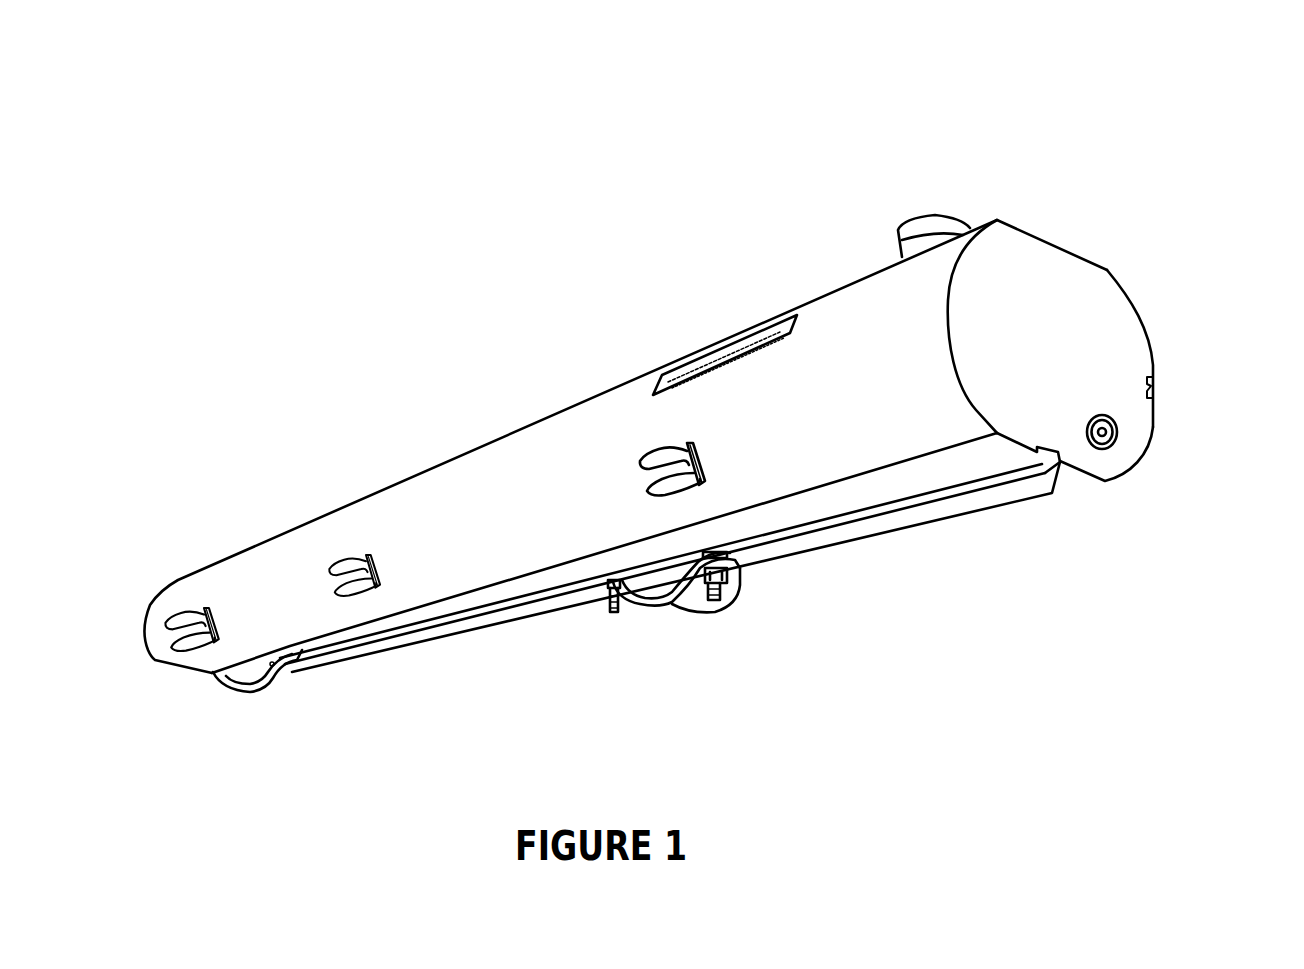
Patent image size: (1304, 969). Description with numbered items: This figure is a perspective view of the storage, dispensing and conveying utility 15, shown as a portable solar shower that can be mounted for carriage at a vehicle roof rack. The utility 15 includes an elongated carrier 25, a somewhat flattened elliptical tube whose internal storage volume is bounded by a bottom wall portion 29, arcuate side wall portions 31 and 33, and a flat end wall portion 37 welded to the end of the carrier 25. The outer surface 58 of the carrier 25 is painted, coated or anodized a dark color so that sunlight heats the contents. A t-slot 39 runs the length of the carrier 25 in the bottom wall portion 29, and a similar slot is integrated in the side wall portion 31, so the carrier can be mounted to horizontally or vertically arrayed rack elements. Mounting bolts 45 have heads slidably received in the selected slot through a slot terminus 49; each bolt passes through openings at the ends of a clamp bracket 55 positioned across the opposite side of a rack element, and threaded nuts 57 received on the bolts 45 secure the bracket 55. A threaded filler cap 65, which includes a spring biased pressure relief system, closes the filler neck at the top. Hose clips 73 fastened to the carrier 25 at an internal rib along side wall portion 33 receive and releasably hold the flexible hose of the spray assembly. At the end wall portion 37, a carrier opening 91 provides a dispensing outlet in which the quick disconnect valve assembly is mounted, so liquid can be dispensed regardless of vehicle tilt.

The storage, dispensing and conveying utility 15 is at (1037, 142).
The carrier 25 is at (1002, 255).
The bottom wall portion 29 is at (1037, 490).
The arcuate side wall portion 31 is at (1152, 428).
The arcuate side wall portion 33 is at (945, 332).
The end wall portion 37 is at (1072, 270).
The elongated slot 39 is at (952, 490).
The mounting bolt 45 is at (615, 603).
The slot terminus 49 is at (1057, 462).
The clamp bracket 55 is at (270, 690).
The threaded nut 57 is at (608, 583).
The outer surface 58 is at (420, 525).
The threaded filler cap 65 is at (903, 227).
The hose clip 73 is at (650, 463).
The carrier opening 91 is at (1113, 445).